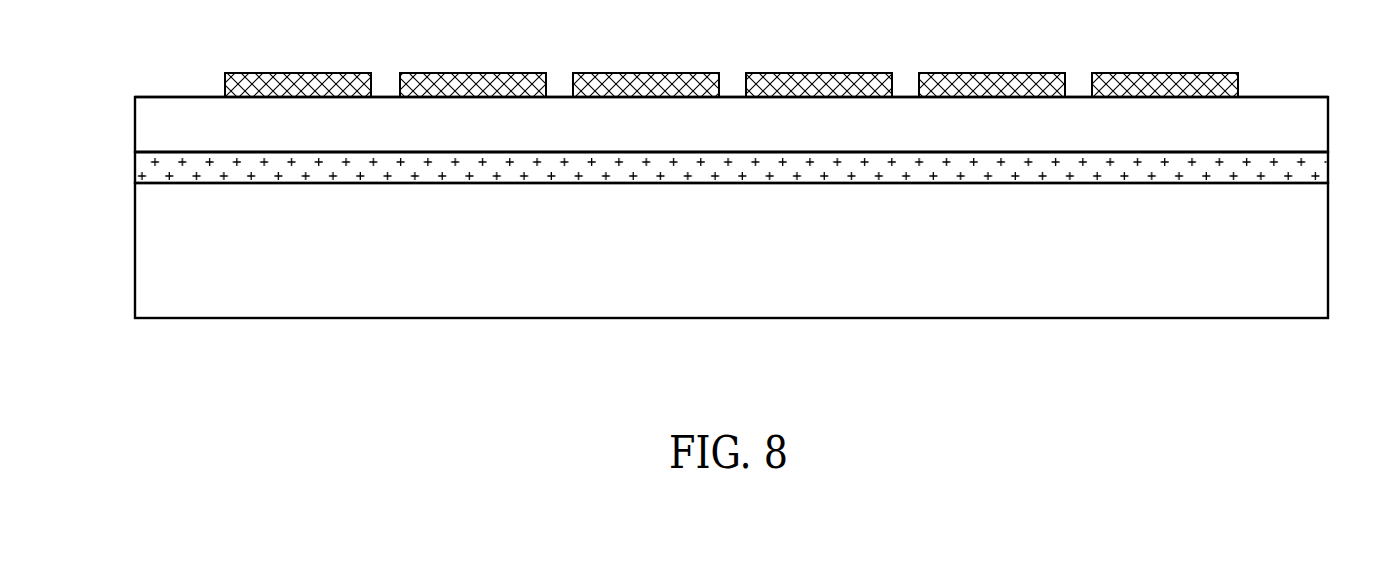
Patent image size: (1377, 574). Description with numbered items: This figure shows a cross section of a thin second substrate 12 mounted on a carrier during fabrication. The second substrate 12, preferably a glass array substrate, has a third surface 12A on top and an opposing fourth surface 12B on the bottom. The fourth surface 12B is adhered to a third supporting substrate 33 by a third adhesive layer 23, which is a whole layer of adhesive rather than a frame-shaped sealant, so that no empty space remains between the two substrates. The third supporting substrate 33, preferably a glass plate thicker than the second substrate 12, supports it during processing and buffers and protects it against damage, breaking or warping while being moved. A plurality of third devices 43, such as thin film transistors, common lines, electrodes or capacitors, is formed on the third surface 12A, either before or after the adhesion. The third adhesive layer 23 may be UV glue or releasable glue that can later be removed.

The second substrate 12 is at (735, 143).
The third surface 12A is at (1264, 97).
The fourth surface 12B is at (1290, 152).
The third adhesive layer 23 is at (152, 162).
The third supporting substrate 33 is at (740, 255).
The third devices 43 is at (305, 85).